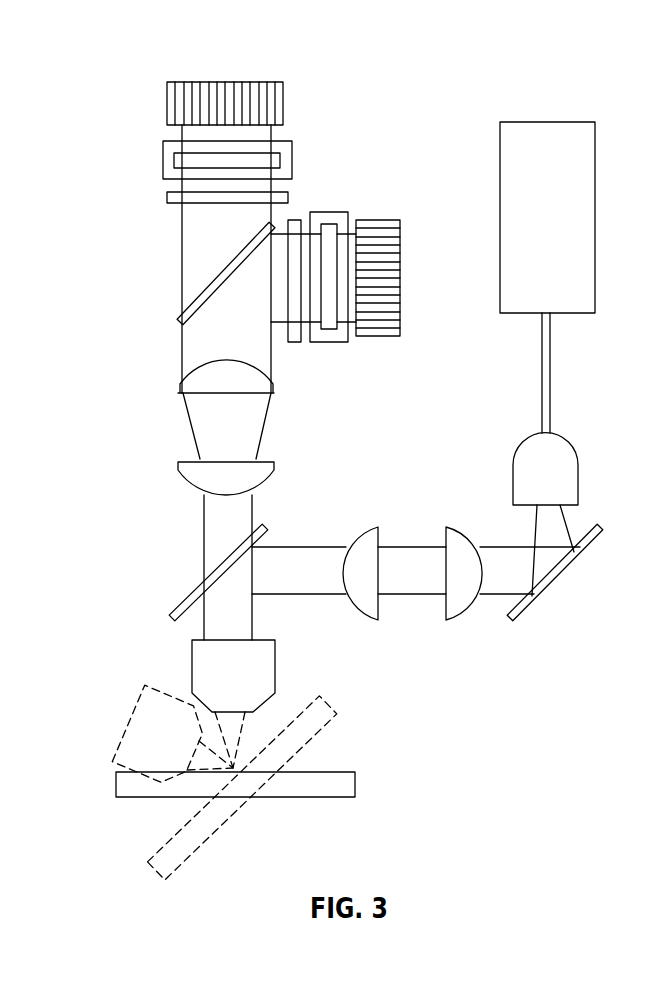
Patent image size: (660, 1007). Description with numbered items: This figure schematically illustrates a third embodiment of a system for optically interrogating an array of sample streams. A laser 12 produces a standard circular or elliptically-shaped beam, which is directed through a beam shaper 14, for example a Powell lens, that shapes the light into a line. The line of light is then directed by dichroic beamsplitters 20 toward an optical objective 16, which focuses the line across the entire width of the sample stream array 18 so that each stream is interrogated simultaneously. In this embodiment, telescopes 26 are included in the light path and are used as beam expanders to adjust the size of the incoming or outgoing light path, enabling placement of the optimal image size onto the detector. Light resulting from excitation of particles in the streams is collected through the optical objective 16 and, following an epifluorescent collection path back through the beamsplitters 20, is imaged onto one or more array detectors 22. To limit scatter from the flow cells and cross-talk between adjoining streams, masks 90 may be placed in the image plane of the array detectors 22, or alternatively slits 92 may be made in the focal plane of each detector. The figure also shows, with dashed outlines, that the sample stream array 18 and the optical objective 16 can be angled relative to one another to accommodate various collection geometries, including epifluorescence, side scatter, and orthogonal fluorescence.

The laser 12 is at (585, 226).
The beam shaper 14 is at (553, 463).
The optical objective 16 is at (243, 676).
The sample stream array 18 is at (192, 823).
The beamsplitters 20 is at (287, 290).
The array detectors 22 is at (293, 152).
The telescopes 26 is at (238, 419).
The masks 90 is at (245, 82).
The slits 92 is at (186, 165).